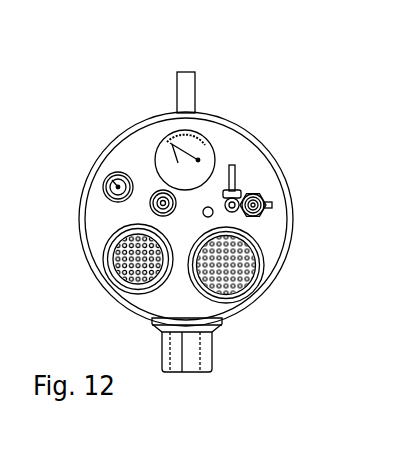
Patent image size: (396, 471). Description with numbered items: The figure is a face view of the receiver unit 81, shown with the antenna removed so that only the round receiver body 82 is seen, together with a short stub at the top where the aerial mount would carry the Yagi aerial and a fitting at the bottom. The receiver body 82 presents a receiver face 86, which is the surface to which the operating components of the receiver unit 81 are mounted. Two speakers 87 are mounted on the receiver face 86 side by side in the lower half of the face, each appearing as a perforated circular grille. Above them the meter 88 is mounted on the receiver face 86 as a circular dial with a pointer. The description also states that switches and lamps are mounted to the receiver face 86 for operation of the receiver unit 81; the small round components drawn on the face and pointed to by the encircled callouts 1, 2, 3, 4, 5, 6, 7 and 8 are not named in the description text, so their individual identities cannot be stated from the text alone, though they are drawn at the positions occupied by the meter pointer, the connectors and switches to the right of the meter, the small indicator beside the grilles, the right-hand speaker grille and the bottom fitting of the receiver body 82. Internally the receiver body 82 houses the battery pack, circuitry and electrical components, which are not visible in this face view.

The gauge pointer pivot 1 is at (198, 160).
The electrical connector 2 is at (272, 205).
The toggle switch 3 is at (257, 213).
The indicator light 4 is at (214, 215).
The round connector 5 is at (154, 195).
The indicator gauge 6 is at (118, 187).
The perforated vent grille 7 is at (260, 281).
The bottom fitting 8 is at (223, 320).
The receiver unit 81 is at (273, 130).
The receiver body 82 is at (270, 178).
The receiver face 86 is at (117, 213).
The speakers 87 is at (257, 277).
The meter 88 is at (207, 157).